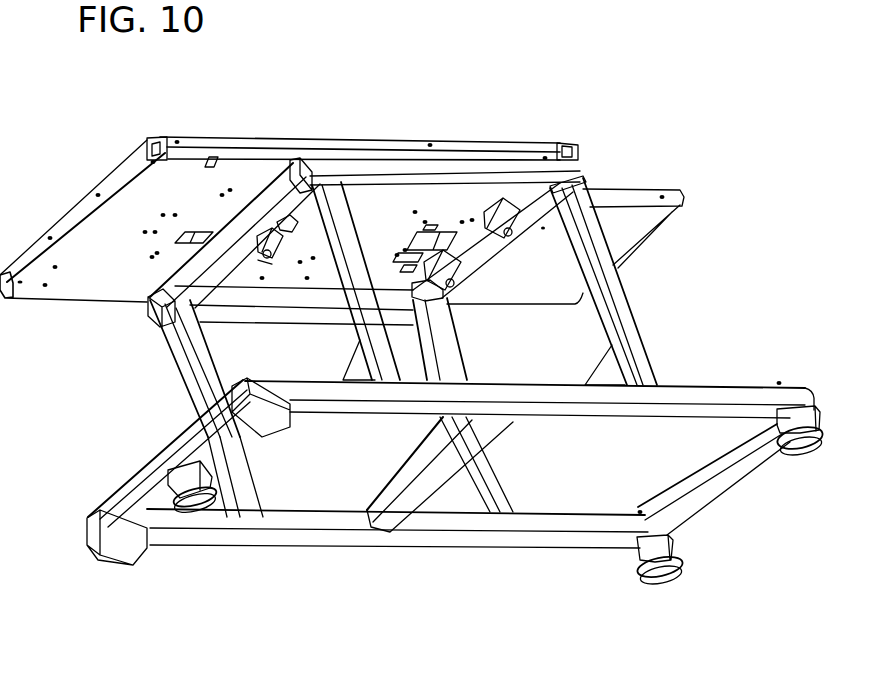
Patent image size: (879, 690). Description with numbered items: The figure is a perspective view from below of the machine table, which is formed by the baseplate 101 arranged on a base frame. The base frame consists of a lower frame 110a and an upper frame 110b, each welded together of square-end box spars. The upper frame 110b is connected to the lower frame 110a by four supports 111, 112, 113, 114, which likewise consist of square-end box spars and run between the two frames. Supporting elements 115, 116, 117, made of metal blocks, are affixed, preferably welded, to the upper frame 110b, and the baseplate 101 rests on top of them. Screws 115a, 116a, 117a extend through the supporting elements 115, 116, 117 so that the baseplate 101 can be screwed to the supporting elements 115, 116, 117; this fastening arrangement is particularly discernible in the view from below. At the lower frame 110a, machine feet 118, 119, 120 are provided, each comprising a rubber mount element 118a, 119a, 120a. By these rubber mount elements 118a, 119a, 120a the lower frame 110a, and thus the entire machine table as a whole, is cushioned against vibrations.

The baseplate 101 is at (187, 180).
The lower frame 110a is at (707, 392).
The upper frame 110b is at (582, 160).
The support 111 is at (163, 365).
The support 112 is at (455, 364).
The support 113 is at (629, 305).
The support 114 is at (347, 328).
The supporting element 115 is at (275, 238).
The screw 115a is at (266, 247).
The supporting element 116 is at (457, 248).
The screw 116a is at (480, 220).
The supporting element 117 is at (588, 180).
The screw 117a is at (594, 200).
The machine foot 118 is at (163, 490).
The rubber mount element 118a is at (167, 472).
The machine foot 119 is at (628, 578).
The rubber mount element 119a is at (632, 560).
The machine foot 120 is at (788, 452).
The rubber mount element 120a is at (780, 438).